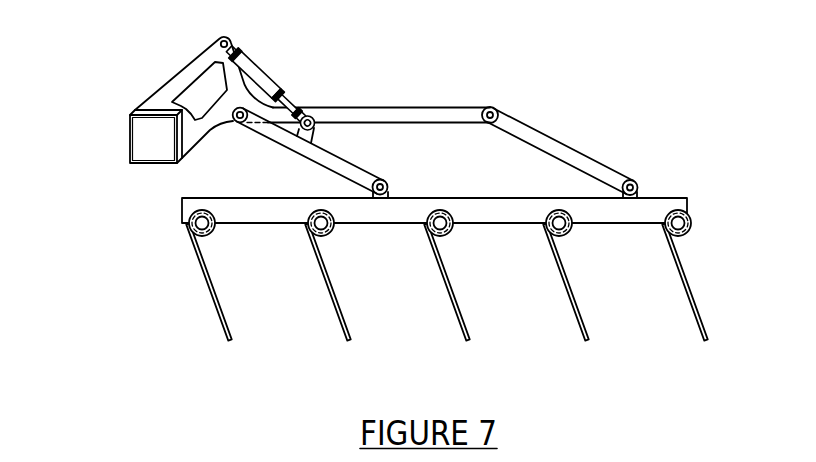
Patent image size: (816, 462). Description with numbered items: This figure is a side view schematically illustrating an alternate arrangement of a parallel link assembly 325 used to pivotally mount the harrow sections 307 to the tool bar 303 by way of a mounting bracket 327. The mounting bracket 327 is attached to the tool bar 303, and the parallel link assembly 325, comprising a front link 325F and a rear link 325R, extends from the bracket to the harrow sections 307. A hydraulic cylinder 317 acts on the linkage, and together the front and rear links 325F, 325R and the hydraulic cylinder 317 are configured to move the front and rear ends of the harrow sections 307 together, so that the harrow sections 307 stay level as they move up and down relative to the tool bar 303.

The tool bar 303 is at (130, 160).
The hydraulic cylinder 317 is at (257, 78).
The mounting bracket 327 is at (411, 107).
The parallel link assembly 325 is at (388, 131).
The front link 325F is at (313, 160).
The rear link 325R is at (582, 152).
The harrow sections 307 is at (588, 223).